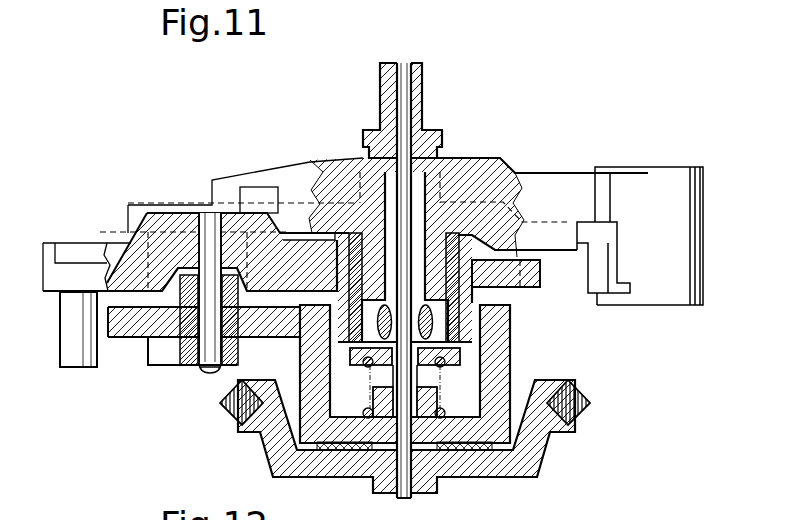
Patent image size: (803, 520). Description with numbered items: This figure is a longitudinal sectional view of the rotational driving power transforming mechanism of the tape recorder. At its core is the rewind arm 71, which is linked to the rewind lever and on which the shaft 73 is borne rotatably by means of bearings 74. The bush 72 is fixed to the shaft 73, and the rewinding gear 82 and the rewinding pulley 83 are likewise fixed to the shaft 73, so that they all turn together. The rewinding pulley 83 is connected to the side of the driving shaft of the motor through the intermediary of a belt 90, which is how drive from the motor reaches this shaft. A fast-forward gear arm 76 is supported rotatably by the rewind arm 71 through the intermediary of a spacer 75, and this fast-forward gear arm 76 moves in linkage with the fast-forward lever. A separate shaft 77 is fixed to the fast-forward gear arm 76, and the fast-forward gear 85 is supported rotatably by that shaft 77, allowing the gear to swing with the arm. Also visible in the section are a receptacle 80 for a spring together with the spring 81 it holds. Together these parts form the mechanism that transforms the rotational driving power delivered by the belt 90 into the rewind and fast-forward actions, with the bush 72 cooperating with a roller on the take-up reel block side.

The rewind arm 71 is at (515, 173).
The bush 72 is at (423, 112).
The shaft 73 is at (400, 75).
The bearings 74 is at (350, 356).
The spacer 75 is at (348, 222).
The fast-forward gear arm 76 is at (240, 243).
The shaft 77 is at (205, 213).
The receptacle for a spring 80 is at (460, 363).
The spring 81 is at (438, 408).
The rewinding gear 82 is at (495, 324).
The rewinding pulley 83 is at (560, 430).
The fast-forward gear 85 is at (128, 338).
The belt 90 is at (580, 396).